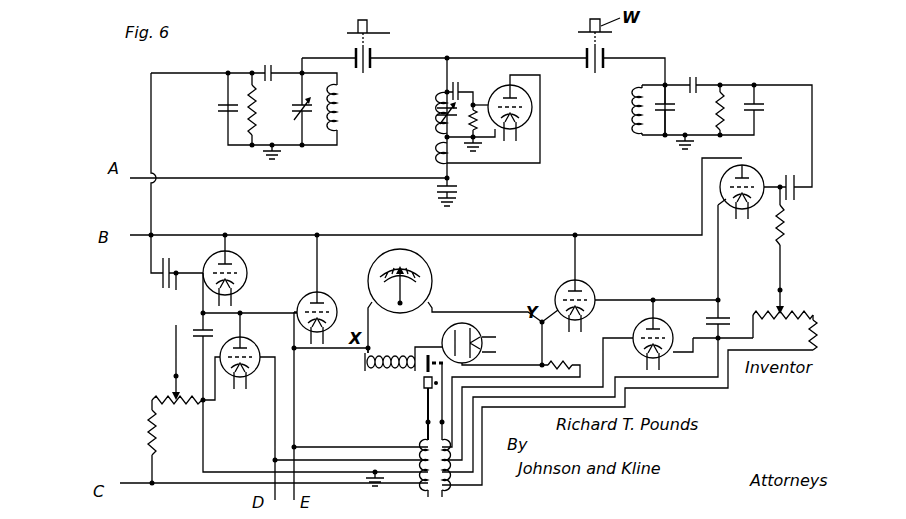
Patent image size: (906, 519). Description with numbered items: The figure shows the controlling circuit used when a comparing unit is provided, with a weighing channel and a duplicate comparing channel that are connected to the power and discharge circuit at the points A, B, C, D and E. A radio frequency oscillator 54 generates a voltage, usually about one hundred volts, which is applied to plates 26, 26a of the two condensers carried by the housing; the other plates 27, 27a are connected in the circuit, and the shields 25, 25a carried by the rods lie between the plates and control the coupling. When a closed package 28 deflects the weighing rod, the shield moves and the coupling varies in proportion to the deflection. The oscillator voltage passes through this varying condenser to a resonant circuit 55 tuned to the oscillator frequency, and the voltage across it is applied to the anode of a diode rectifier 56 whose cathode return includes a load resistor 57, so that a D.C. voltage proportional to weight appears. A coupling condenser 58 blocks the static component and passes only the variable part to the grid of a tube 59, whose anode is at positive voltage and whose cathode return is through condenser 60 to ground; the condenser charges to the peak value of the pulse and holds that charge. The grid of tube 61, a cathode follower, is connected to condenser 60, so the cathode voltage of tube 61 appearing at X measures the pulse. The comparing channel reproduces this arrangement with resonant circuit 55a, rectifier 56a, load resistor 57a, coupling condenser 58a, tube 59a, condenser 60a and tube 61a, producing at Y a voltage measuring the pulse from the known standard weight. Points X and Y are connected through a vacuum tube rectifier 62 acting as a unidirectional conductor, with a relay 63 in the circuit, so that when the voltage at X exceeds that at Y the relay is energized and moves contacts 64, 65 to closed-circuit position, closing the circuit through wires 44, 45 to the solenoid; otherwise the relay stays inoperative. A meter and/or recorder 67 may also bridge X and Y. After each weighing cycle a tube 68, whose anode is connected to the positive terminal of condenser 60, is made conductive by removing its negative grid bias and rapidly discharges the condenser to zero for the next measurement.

The shield 25 is at (366, 72).
The condenser plate 26 is at (372, 53).
The condenser plate 27 is at (355, 51).
The closed package 28 is at (367, 25).
The radio frequency oscillator 54 is at (510, 173).
The resonant circuit 55 is at (345, 121).
The diode rectifier 56 is at (264, 66).
The load resistor 57 is at (256, 123).
The coupling condenser 58 is at (159, 282).
The tube 59 is at (246, 270).
The condenser 60 is at (196, 341).
The tube 61 is at (331, 303).
The vacuum tube rectifier 62 is at (467, 337).
The relay 63 is at (392, 356).
The contact 64 is at (426, 409).
The contact 65 is at (424, 384).
The meter and/or recorder 67 is at (423, 259).
The tube 68 is at (252, 347).
The shield 25a is at (597, 75).
The condenser plate 26a is at (605, 52).
The condenser plate 27a is at (586, 52).
The resonant circuit 55a is at (655, 148).
The rectifier 56a is at (702, 80).
The load resistor 57a is at (703, 111).
The coupling condenser 58a is at (797, 195).
The tube 59a is at (756, 173).
The condenser 60a is at (728, 315).
The tube 61a is at (591, 294).
The wire 44 is at (428, 497).
The wire 45 is at (446, 497).